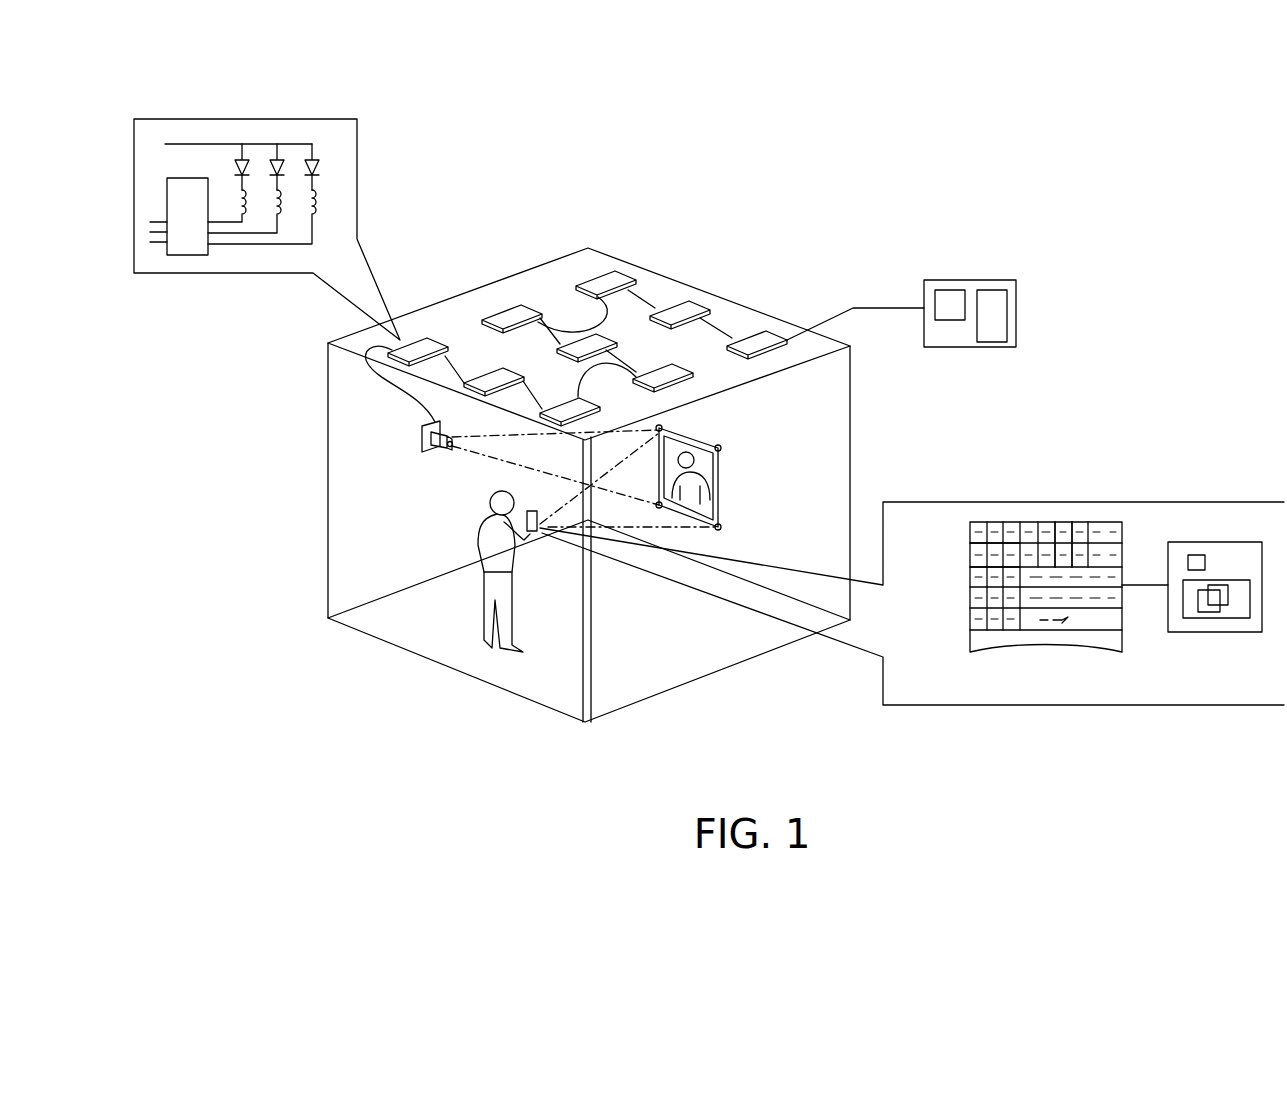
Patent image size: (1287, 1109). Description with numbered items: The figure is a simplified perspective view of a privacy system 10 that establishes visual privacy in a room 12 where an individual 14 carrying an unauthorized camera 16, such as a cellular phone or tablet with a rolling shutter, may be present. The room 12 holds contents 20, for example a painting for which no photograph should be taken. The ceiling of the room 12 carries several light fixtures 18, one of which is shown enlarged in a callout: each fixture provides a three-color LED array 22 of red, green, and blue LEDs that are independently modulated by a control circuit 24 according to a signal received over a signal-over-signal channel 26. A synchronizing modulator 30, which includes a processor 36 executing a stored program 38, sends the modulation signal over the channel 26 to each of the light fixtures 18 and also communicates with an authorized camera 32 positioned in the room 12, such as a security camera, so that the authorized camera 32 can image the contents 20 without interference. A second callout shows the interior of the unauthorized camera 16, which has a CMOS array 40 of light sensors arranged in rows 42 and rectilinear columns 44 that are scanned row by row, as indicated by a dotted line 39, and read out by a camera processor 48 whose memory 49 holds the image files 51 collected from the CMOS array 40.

The privacy system 10 is at (1112, 255).
The room 12 is at (366, 442).
The individual 14 is at (490, 598).
The unauthorized camera 16 is at (528, 506).
The light fixture 18 is at (331, 104).
The contents 20 is at (720, 470).
The three-color LED array 22 is at (331, 170).
The control circuit 24 is at (190, 236).
The signal-over-signal channel 26 is at (155, 243).
The synchronizing modulator 30 is at (1000, 252).
The authorized camera 32 is at (425, 447).
The processor 36 is at (950, 310).
The stored program 38 is at (995, 332).
The dotted line 39 is at (1034, 622).
The CMOS array 40 is at (1030, 518).
The rows 42 is at (951, 555).
The rectilinear columns 44 is at (1113, 519).
The camera processor 48 is at (1218, 545).
The memory 49 is at (1240, 613).
The image files 51 is at (1222, 605).